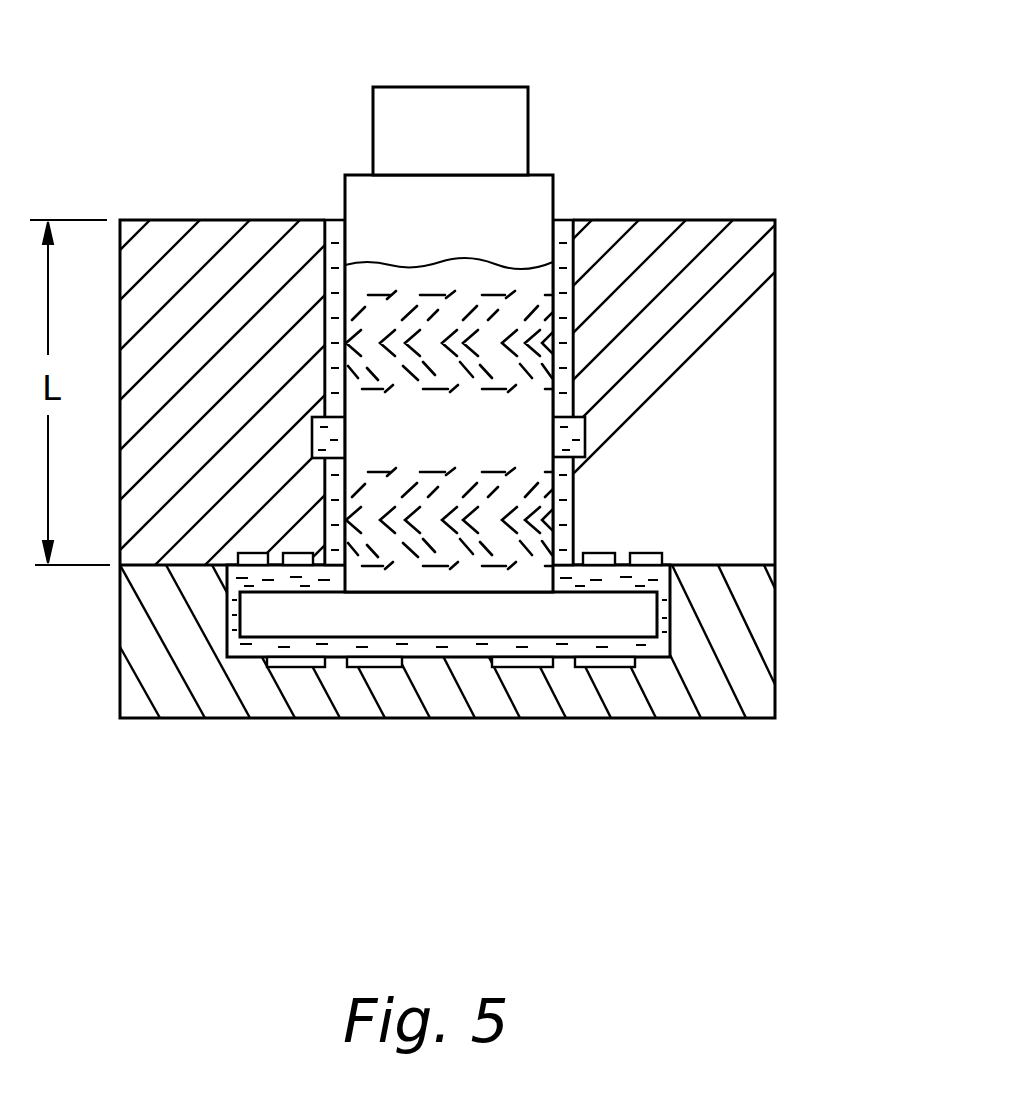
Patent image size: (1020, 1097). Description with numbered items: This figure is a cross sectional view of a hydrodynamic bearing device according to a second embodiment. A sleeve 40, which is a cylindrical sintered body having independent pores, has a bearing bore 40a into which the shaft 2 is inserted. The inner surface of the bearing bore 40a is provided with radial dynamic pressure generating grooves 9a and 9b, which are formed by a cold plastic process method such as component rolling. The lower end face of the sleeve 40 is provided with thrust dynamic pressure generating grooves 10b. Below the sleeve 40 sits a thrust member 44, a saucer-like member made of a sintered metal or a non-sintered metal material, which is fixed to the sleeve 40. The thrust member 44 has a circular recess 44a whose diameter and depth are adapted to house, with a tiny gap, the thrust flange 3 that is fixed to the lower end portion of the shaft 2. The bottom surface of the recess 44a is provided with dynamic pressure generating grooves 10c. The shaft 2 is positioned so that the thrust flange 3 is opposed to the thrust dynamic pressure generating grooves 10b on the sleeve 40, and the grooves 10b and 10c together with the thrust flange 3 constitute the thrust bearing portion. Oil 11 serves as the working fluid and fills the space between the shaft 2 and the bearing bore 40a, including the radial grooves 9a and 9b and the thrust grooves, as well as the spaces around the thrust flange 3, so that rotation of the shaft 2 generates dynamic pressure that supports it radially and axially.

The shaft 2 is at (448, 120).
The thrust flange 3 is at (506, 606).
The radial dynamic pressure generating groove 9a is at (435, 296).
The radial dynamic pressure generating groove 9b is at (429, 566).
The thrust dynamic pressure generating grooves 10b is at (256, 566).
The dynamic pressure generating grooves 10c is at (375, 668).
The oil 11 is at (337, 282).
The sleeve 40 is at (752, 362).
The bearing bore 40a is at (573, 252).
The thrust member 44 is at (757, 630).
The recess 44a is at (666, 652).